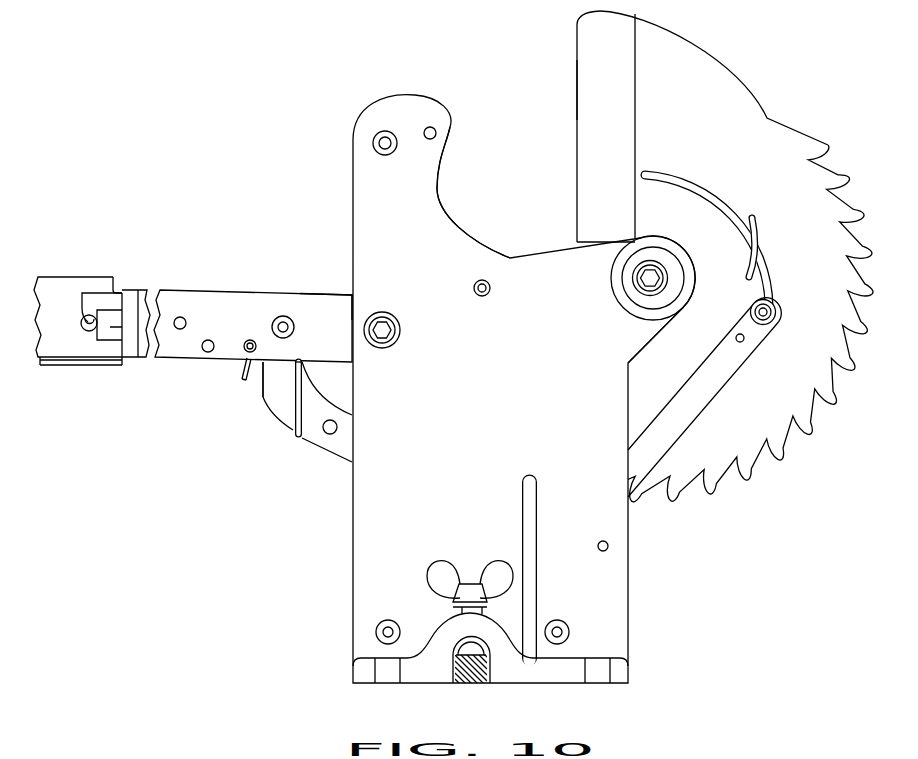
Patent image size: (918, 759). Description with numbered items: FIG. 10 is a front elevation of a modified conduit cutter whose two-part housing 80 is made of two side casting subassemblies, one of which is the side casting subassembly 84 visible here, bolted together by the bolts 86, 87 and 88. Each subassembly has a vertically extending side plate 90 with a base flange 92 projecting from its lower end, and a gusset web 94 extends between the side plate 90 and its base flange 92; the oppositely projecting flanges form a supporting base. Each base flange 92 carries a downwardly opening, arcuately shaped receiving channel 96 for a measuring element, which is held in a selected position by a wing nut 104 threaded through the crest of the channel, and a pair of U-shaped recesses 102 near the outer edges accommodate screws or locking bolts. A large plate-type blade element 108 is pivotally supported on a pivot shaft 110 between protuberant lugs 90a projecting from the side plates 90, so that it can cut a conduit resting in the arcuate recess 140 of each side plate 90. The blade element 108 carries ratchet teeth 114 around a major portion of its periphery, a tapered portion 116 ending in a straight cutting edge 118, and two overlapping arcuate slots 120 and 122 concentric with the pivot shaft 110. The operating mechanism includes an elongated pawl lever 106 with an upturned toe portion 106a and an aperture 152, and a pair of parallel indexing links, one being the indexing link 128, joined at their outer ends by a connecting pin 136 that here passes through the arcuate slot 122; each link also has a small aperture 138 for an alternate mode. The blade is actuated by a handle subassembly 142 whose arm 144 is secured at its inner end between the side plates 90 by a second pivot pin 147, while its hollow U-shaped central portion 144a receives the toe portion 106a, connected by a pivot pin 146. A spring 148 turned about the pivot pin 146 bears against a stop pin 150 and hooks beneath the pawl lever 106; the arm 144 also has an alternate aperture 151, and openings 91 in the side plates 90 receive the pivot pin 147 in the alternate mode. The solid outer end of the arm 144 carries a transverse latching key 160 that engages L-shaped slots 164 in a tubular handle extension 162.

The two-part housing 80 is at (473, 389).
The side casting subassembly 84 is at (629, 550).
The bolt 86 is at (396, 620).
The bolt 87 is at (560, 620).
The bolt 88 is at (374, 136).
The side plate 90 is at (516, 370).
The protuberant lug 90a is at (633, 334).
The opening 91 is at (608, 545).
The base flange 92 is at (510, 661).
The gusset web 94 is at (539, 518).
The receiving channel 96 is at (485, 638).
The U-shaped recess 102 is at (392, 672).
The wing nut 104 is at (503, 578).
The pawl lever 106 is at (295, 427).
The upturned toe portion 106a is at (267, 394).
The blade element 108 is at (712, 92).
The pivot shaft 110 is at (632, 280).
The ratchet teeth 114 is at (807, 432).
The tapered portion 116 is at (614, 110).
The straight cutting edge 118 is at (577, 82).
The arcuate slot 120 is at (769, 260).
The arcuate slot 122 is at (680, 178).
The indexing link 128 is at (712, 389).
The connecting pin 136 is at (772, 304).
The aperture 138 is at (745, 339).
The arcuate recess 140 is at (455, 222).
The handle subassembly 142 is at (192, 305).
The arm 144 is at (250, 328).
The U-shaped central portion 144a is at (337, 300).
The pivot pin 146 is at (283, 316).
The second pivot pin 147 is at (400, 330).
The spring 148 is at (292, 428).
The stop pin 150 is at (246, 352).
The alternate aperture 151 is at (203, 350).
The aperture 152 is at (340, 421).
The latching key 160 is at (93, 331).
The handle extension 162 is at (48, 278).
The L-shaped slot 164 is at (110, 295).